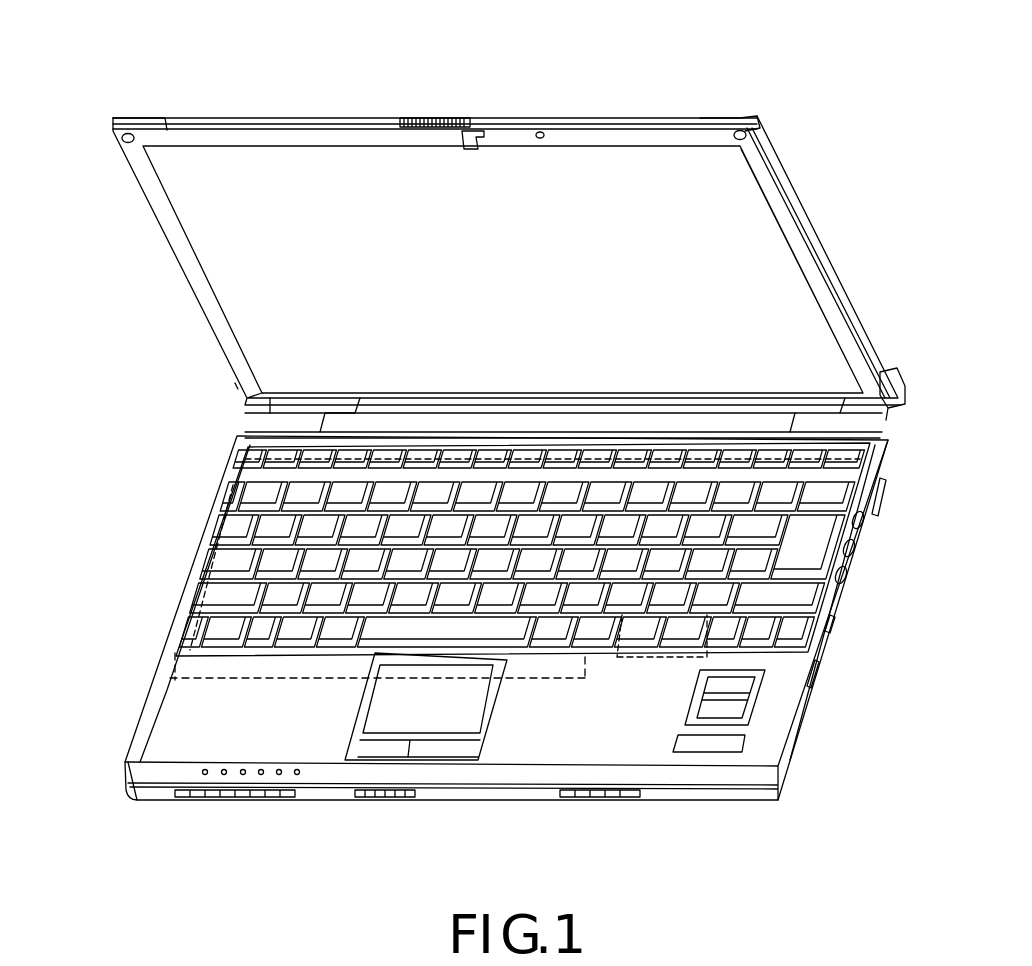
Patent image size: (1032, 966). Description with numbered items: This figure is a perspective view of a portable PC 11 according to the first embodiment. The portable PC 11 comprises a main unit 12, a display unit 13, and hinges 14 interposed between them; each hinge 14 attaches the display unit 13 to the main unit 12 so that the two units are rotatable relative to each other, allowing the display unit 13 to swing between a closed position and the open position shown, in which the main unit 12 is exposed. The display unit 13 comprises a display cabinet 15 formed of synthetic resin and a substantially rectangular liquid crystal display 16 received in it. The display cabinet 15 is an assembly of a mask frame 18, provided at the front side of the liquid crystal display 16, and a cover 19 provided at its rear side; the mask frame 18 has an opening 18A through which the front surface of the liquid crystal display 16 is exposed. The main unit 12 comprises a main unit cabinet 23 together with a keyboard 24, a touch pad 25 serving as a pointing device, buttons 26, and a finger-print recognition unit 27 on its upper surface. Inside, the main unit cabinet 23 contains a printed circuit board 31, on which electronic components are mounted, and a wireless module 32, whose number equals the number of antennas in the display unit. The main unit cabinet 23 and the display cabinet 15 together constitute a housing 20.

The portable PC 11 is at (493, 90).
The main unit 12 is at (150, 516).
The display unit 13 is at (130, 258).
The hinges 14 is at (293, 428).
The display cabinet 15 is at (730, 117).
The liquid crystal display 16 is at (594, 143).
The mask frame 18 is at (190, 268).
The opening 18A is at (243, 278).
The cover 19 is at (145, 118).
The housing 20 is at (908, 368).
The main unit cabinet 23 is at (150, 710).
The keyboard 24 is at (805, 543).
The touch pad 25 is at (385, 713).
The buttons 26 is at (448, 750).
The finger-print recognition unit 27 is at (720, 712).
The printed circuit board 31 is at (215, 583).
The wireless module 32 is at (627, 660).